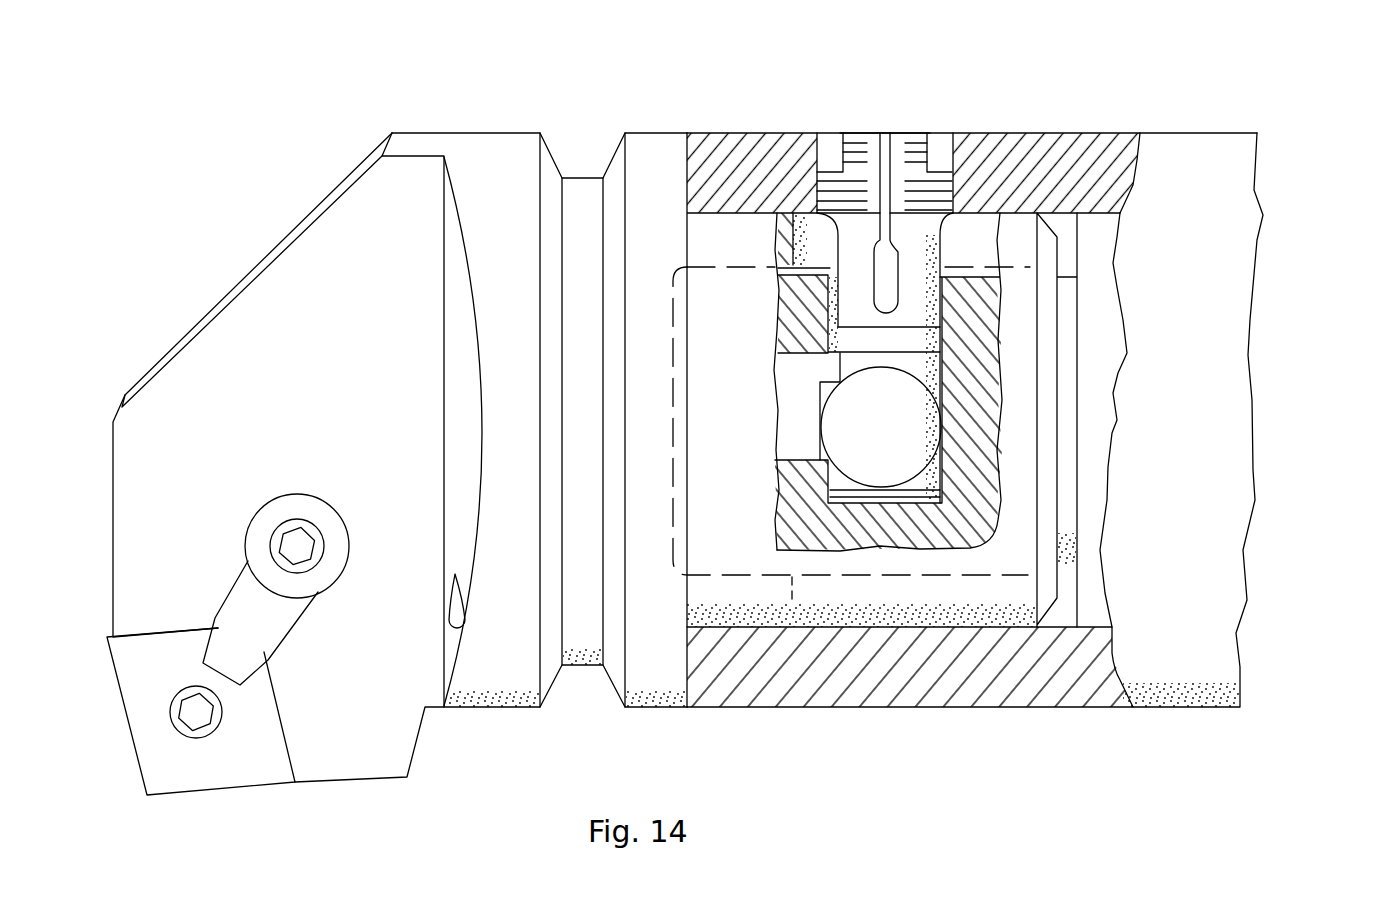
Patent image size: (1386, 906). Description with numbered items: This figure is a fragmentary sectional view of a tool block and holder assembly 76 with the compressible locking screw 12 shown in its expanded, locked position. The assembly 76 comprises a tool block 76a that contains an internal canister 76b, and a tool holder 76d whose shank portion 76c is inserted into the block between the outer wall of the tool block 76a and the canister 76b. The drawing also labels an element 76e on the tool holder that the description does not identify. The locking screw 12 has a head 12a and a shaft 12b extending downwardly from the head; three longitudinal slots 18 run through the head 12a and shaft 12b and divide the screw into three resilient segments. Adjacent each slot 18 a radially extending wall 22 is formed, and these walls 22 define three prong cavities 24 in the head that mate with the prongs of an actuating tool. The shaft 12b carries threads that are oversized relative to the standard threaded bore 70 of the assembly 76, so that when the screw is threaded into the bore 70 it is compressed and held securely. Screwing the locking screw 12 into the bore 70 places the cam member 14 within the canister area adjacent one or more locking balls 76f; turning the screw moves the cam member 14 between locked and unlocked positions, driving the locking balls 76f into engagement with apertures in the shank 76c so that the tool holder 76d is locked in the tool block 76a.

The locking screw 12 is at (1080, 198).
The head 12a is at (870, 90).
The shaft 12b is at (953, 252).
The cam member 14 is at (968, 358).
The longitudinal slots 18 is at (888, 150).
The wall 22 is at (842, 142).
The prong cavities 24 is at (830, 168).
The threaded bore 70 is at (945, 235).
The tool block and holder assembly 76 is at (1264, 186).
The tool block 76a is at (767, 663).
The canister 76b is at (970, 482).
The shank portion 76c is at (747, 240).
The tool holder 76d is at (474, 133).
The cutting insert 76e is at (250, 775).
The locking balls 76f is at (885, 452).